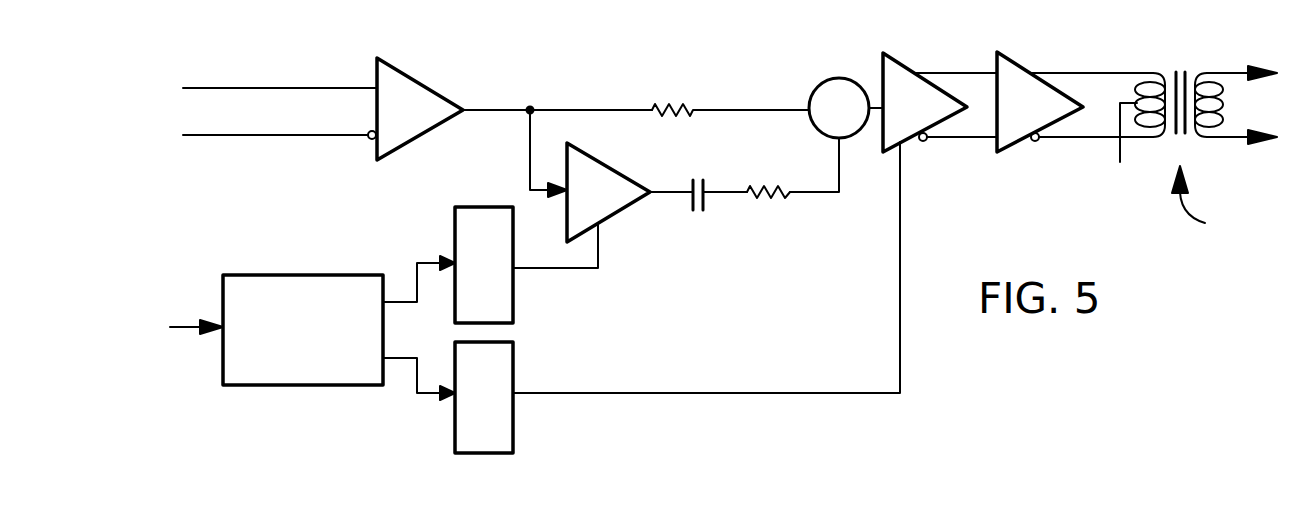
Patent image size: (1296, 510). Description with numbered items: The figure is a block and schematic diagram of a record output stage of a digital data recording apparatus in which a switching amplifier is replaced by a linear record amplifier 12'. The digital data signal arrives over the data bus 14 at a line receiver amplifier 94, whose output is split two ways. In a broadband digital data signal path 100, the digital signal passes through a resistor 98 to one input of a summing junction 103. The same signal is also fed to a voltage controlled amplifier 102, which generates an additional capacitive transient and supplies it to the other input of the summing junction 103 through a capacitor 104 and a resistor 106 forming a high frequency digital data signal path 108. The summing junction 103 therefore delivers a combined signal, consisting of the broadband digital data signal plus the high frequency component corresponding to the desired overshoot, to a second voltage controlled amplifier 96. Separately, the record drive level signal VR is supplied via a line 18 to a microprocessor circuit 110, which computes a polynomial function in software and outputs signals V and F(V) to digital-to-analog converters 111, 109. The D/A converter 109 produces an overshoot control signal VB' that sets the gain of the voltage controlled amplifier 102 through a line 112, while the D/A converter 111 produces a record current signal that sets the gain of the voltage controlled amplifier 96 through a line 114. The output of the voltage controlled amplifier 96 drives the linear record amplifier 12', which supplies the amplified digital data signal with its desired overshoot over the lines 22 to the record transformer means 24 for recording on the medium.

The data bus 14 is at (337, 135).
The line receiver amplifier 94 is at (413, 78).
The broadband digital data signal path 100 is at (592, 108).
The resistor 98 is at (690, 115).
The summing junction 103 is at (837, 78).
The voltage controlled amplifier 102 is at (640, 205).
The capacitor 104 is at (708, 207).
The resistor 106 is at (765, 192).
The high frequency digital data signal path 108 is at (803, 197).
The line 112 is at (572, 270).
The microprocessor circuit 110 is at (300, 275).
The line 18 is at (213, 327).
The digital-to-analog converter 109 is at (487, 207).
The digital-to-analog converter 111 is at (515, 348).
The line 114 is at (560, 392).
The voltage controlled amplifier 96 is at (898, 60).
The linear record amplifier 12' is at (1075, 90).
The lines 22 is at (1085, 70).
The record transformer means 24 is at (1208, 204).